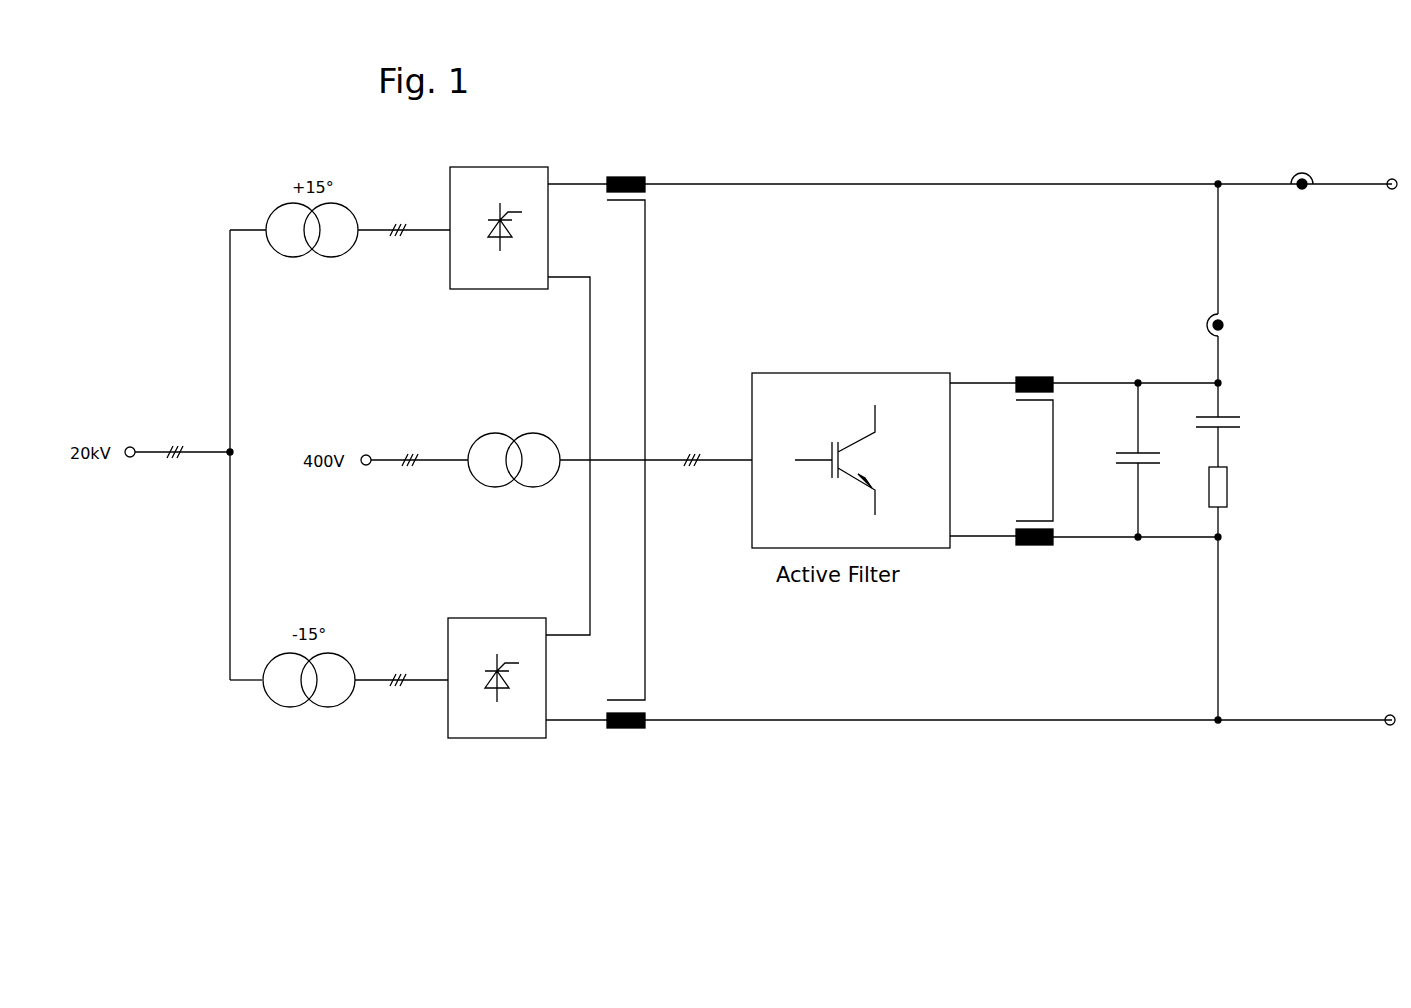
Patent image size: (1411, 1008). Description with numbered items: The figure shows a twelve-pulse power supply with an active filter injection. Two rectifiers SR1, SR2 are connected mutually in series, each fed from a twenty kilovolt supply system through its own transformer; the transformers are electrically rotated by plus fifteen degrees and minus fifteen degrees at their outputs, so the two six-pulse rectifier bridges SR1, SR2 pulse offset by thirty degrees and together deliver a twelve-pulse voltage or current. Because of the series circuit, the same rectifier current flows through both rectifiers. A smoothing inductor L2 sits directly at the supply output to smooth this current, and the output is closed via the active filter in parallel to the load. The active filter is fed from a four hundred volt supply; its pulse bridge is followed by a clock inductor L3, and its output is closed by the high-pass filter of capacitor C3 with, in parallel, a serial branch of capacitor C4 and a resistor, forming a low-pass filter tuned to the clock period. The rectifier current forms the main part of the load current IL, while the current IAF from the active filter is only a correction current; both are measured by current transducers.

The rectifier SR1 is at (499, 245).
The rectifier SR2 is at (497, 695).
The smoothing inductor L2 is at (626, 440).
The clock inductor L3 is at (1034, 449).
The capacitor C3 is at (1121, 460).
The capacitor C4 is at (1237, 425).
The load current IL is at (1302, 189).
The active filter current IAF is at (1223, 325).